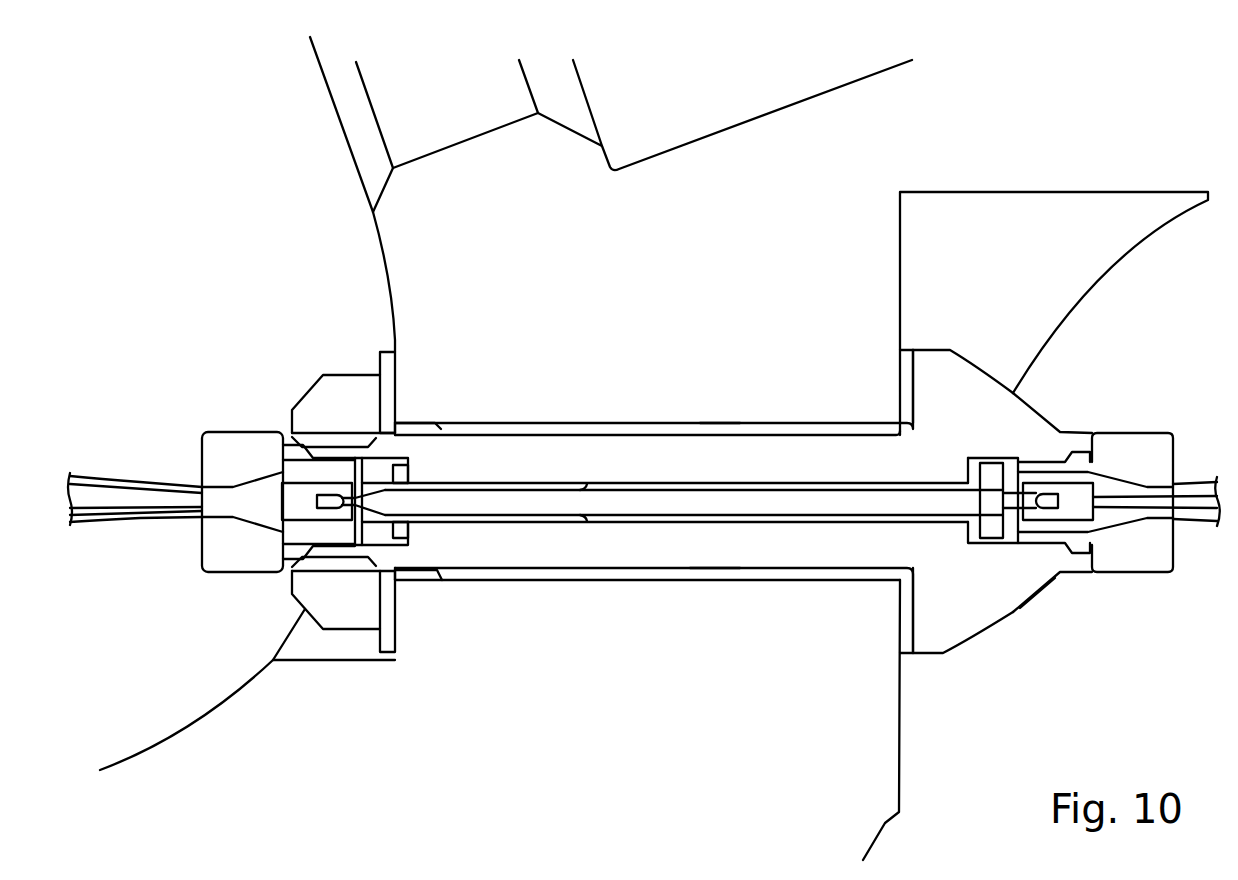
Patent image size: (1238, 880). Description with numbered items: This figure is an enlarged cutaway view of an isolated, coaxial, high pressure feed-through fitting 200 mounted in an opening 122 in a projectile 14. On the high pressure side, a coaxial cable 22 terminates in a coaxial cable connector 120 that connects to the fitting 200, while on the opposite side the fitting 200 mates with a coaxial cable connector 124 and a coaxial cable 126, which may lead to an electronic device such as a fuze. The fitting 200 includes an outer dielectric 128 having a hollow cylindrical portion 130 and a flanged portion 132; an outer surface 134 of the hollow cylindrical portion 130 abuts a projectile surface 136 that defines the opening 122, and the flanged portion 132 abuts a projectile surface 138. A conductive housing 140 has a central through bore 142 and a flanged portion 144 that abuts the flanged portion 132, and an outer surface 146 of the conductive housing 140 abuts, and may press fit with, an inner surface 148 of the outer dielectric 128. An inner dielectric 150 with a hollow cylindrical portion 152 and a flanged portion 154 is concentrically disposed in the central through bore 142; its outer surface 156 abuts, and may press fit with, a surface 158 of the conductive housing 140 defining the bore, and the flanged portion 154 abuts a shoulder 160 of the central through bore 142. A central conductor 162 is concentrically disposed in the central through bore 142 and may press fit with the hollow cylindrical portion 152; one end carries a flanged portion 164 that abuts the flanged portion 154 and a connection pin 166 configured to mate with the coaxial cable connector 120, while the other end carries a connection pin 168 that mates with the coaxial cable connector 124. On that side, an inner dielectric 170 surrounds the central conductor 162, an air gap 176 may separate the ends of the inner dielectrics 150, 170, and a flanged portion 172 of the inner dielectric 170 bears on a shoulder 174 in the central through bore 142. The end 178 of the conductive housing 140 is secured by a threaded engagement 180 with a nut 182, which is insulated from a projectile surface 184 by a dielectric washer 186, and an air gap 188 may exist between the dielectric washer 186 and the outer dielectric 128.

The projectile 14 is at (385, 303).
The coaxial cable 22 is at (1193, 483).
The coaxial cable connector 120 is at (1133, 433).
The opening 122 is at (427, 421).
The coaxial cable connector 124 is at (237, 440).
The coaxial cable 126 is at (130, 480).
The outer dielectric 128 is at (840, 426).
The hollow cylindrical portion 130 is at (714, 425).
The flanged portion 132 is at (907, 377).
The outer surface 134 is at (621, 425).
The projectile surface 136 is at (708, 572).
The projectile surface 138 is at (905, 366).
The conductive housing 140 is at (970, 385).
The central through bore 142 is at (1014, 561).
The flanged portion 144 is at (940, 656).
The outer surface 146 is at (758, 437).
The inner surface 148 is at (655, 436).
The inner dielectric 150 is at (930, 518).
The hollow cylindrical portion 152 is at (920, 482).
The flanged portion 154 is at (964, 468).
The outer surface 156 is at (814, 490).
The surface 158 is at (838, 514).
The shoulder 160 is at (968, 536).
The central conductor 162 is at (693, 501).
The flanged portion 164 is at (993, 470).
The connection pin 166 is at (1040, 498).
The connection pin 168 is at (342, 509).
The inner dielectric 170 is at (498, 487).
The flanged portion 172 is at (415, 470).
The shoulder 174 is at (412, 530).
The air gap 176 is at (630, 518).
The end 178 is at (323, 553).
The threaded engagement 180 is at (292, 432).
The nut 182 is at (325, 393).
The projectile surface 184 is at (395, 362).
The dielectric washer 186 is at (383, 637).
The air gap 188 is at (404, 428).
The feed-through fitting 200 is at (634, 636).